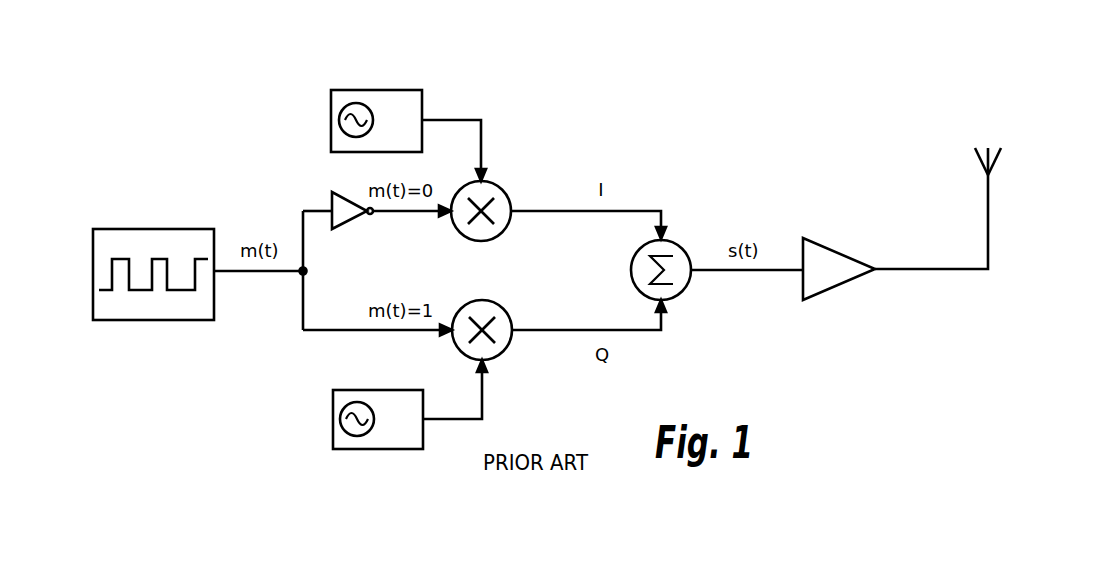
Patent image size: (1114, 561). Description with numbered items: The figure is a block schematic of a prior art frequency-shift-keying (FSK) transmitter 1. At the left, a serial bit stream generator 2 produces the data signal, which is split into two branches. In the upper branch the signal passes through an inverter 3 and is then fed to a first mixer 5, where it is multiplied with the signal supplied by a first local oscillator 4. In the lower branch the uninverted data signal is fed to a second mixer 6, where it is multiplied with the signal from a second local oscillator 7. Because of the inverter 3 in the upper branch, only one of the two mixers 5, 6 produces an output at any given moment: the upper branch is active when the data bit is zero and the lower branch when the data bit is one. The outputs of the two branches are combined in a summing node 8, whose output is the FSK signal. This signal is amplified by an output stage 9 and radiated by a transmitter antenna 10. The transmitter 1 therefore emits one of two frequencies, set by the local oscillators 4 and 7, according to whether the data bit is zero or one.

The FSK transmitter 1 is at (703, 100).
The serial bit stream generator 2 is at (154, 229).
The inverter 3 is at (334, 203).
The first local oscillator 4 is at (331, 120).
The first mixer 5 is at (510, 197).
The second mixer 6 is at (507, 352).
The second local oscillator 7 is at (333, 419).
The summing node 8 is at (677, 242).
The output stage 9 is at (835, 289).
The transmitter antenna 10 is at (1000, 167).